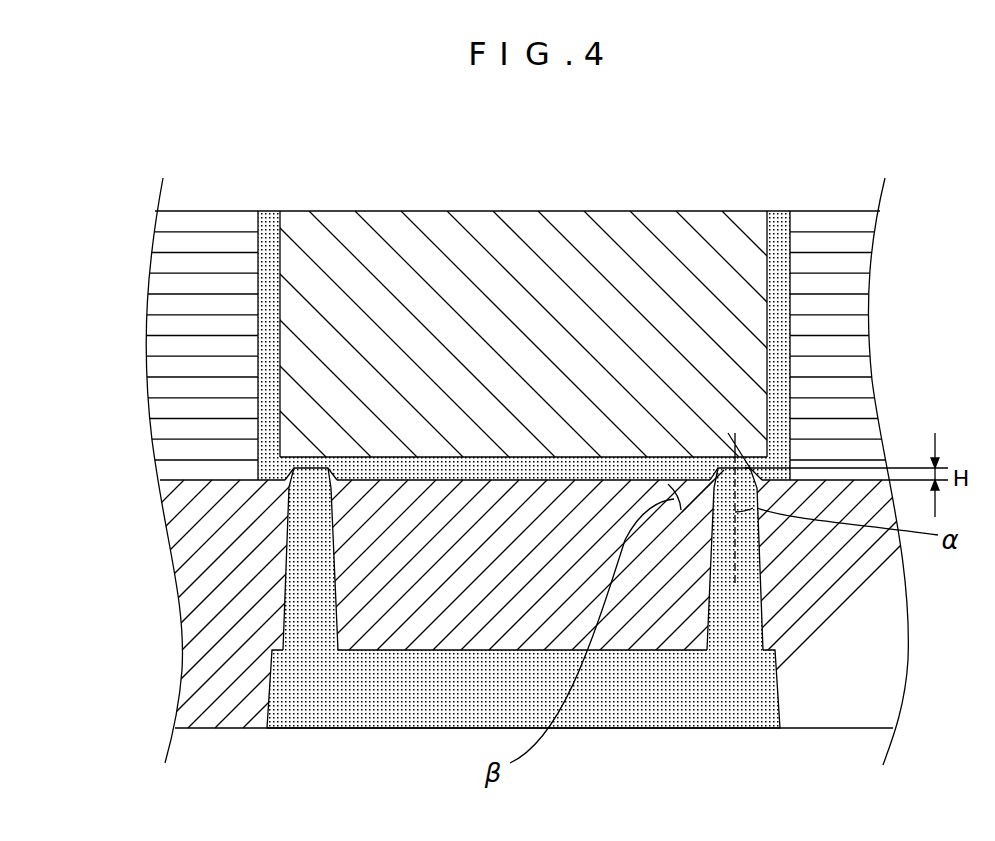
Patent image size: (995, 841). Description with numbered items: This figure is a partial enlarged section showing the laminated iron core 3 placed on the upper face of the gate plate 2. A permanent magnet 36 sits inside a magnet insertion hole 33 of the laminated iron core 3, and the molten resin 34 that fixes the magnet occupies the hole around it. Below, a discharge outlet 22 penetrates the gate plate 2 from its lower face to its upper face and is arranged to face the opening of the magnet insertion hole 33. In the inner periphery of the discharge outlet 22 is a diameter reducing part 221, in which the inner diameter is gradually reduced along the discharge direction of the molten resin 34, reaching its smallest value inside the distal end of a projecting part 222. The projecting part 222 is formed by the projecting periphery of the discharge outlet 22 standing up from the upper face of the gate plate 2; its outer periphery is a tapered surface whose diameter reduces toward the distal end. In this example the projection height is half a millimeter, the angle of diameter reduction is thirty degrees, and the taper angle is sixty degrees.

The gate plate 2 is at (167, 625).
The discharge outlet 22 is at (305, 465).
The diameter reducing part 221 is at (303, 484).
The projecting part 222 is at (296, 470).
The laminated iron core 3 is at (832, 265).
The magnet insertion hole 33 is at (788, 268).
The molten resin 34 is at (269, 242).
The permanent magnet 36 is at (500, 278).